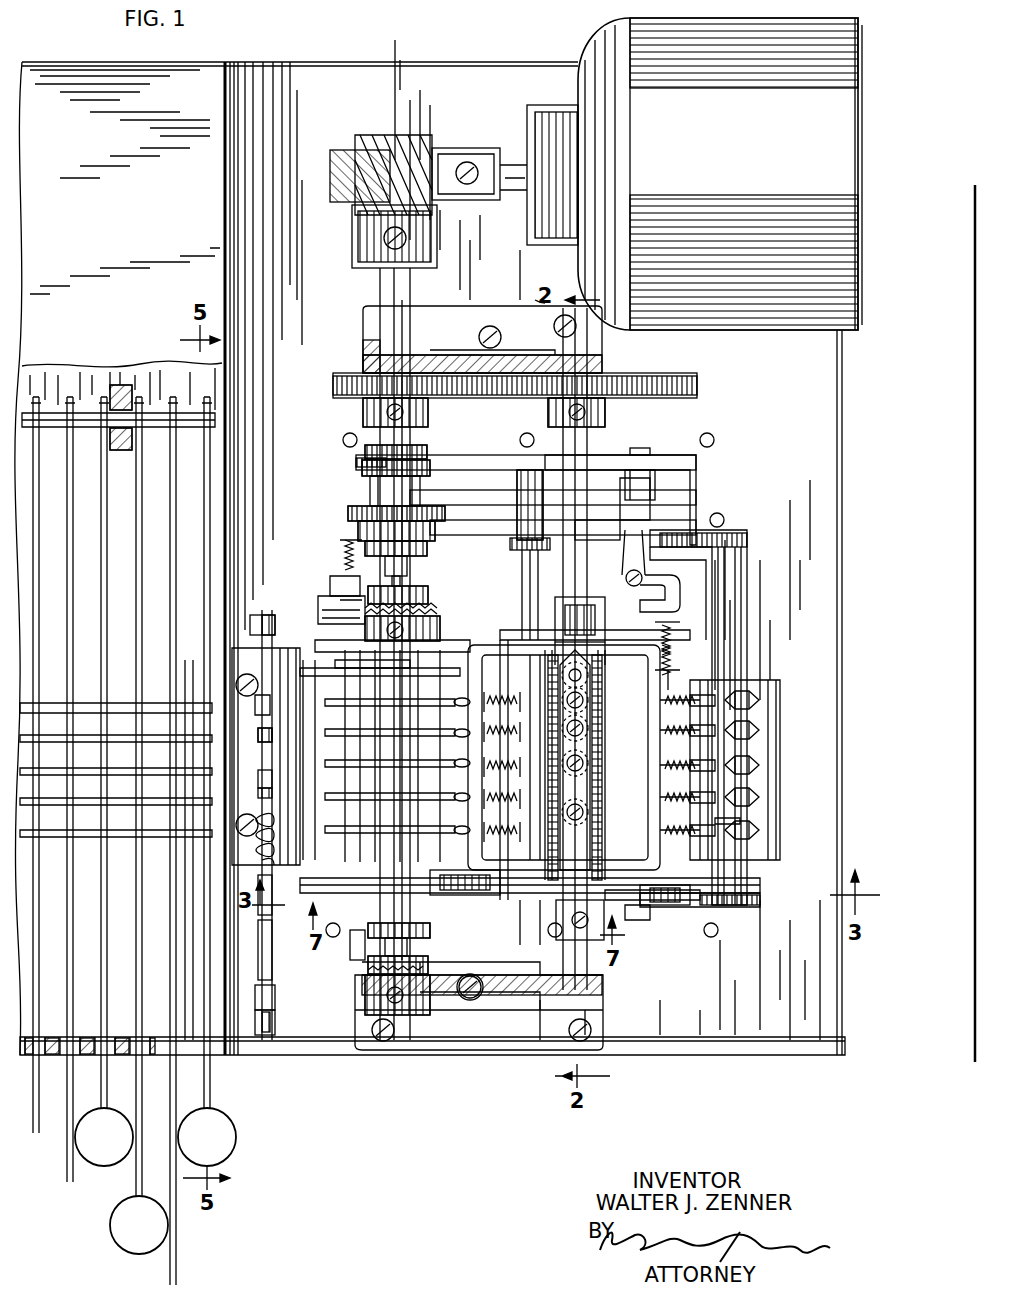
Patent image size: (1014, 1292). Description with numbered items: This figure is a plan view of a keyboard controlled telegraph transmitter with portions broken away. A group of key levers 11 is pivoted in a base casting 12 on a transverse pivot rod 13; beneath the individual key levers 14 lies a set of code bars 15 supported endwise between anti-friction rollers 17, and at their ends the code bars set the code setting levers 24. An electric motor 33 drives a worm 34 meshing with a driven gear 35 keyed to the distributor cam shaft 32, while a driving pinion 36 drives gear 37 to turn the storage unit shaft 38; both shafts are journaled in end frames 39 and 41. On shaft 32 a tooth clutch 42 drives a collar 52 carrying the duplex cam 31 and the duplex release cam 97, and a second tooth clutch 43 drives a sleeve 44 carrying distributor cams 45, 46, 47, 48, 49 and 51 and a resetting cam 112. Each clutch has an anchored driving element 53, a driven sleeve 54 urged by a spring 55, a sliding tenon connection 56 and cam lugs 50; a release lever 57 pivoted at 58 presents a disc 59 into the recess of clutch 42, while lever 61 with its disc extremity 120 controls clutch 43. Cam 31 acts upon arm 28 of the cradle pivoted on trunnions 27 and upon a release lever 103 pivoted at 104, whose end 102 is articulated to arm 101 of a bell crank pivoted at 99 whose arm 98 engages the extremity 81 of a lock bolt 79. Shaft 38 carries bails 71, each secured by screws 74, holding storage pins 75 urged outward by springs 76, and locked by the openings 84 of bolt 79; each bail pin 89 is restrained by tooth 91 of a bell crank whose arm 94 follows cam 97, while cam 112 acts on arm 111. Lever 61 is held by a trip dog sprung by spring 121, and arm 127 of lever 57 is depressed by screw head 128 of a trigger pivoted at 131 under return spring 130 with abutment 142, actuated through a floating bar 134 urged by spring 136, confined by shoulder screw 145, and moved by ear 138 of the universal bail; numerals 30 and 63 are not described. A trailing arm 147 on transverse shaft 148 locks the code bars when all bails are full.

The key levers 11 is at (110, 1190).
The base casting 12 is at (445, 80).
The transverse pivot rod 13 is at (152, 368).
The key lever 14 is at (205, 948).
The code bars 15 is at (115, 830).
The anti-friction rollers 17 is at (762, 704).
The code setting lever 24 is at (740, 832).
The trunnions 27 is at (636, 456).
The arm 28 is at (465, 495).
The bracket 30 is at (725, 594).
The duplex cam 31 is at (360, 499).
The distributor cam shaft 32 is at (382, 273).
The electric motor 33 is at (615, 40).
The driving worm 34 is at (395, 140).
The driven gear 35 is at (345, 157).
The driving pinion 36 is at (348, 372).
The driven gear 37 is at (648, 376).
The storage unit shaft 38 is at (592, 357).
The end frame 39 is at (455, 355).
The end frame 41 is at (470, 1030).
The tooth clutch 42 is at (441, 616).
The tooth clutch 43 is at (358, 980).
The sleeve 44 is at (370, 690).
The distributor cam 45 is at (397, 820).
The distributor cam 46 is at (397, 787).
The distributor cam 47 is at (397, 753).
The distributor cam 48 is at (397, 723).
The distributor cam 49 is at (397, 692).
The cam lugs 50 is at (358, 525).
The distributor cam 51 is at (425, 664).
The driven collar 52 is at (365, 492).
The driving element 53 is at (428, 628).
The driven sleeve 54 is at (425, 588).
The spring 55 is at (420, 568).
The sliding tenon connection 56 is at (428, 546).
The release lever 57 is at (345, 590).
The pivot 58 is at (347, 565).
The disc 59 is at (340, 580).
The clutch control lever 61 is at (365, 955).
The pin carrier 63 is at (340, 800).
The bail 71 is at (655, 620).
The screws 74 is at (672, 634).
The storage pins 75 is at (700, 730).
The spring 76 is at (676, 656).
The lock bolt 79 is at (620, 935).
The narrowed extremities 81 is at (545, 612).
The openings 84 is at (588, 790).
The pin 89 is at (535, 935).
The tooth 91 is at (690, 900).
The arm 94 is at (436, 472).
The duplex release cam 97 is at (360, 473).
The arm 98 is at (655, 586).
The pivot 99 is at (648, 578).
The arm 101 is at (645, 512).
The end 102 is at (630, 540).
The release lever 103 is at (520, 525).
The pivot 104 is at (528, 545).
The arm 111 is at (268, 896).
The cam 112 is at (340, 912).
The disc shaped extremity 120 is at (270, 984).
The spring 121 is at (466, 905).
The horizontally extending arm 127 is at (280, 612).
The screw head 128 is at (262, 616).
The return spring 130 is at (350, 612).
The pivot 131 is at (265, 690).
The floating bar 134 is at (265, 948).
The spring 136 is at (280, 850).
The ear 138 is at (276, 1022).
The abutment 142 is at (265, 728).
The shoulder screw 145 is at (265, 785).
The trailing arm 147 is at (712, 908).
The transverse shaft 148 is at (526, 585).